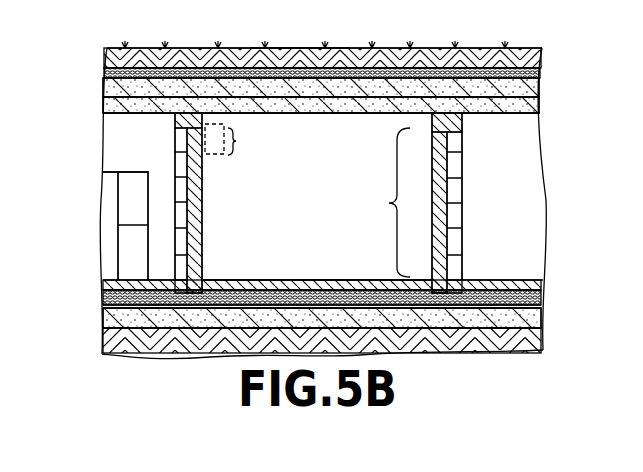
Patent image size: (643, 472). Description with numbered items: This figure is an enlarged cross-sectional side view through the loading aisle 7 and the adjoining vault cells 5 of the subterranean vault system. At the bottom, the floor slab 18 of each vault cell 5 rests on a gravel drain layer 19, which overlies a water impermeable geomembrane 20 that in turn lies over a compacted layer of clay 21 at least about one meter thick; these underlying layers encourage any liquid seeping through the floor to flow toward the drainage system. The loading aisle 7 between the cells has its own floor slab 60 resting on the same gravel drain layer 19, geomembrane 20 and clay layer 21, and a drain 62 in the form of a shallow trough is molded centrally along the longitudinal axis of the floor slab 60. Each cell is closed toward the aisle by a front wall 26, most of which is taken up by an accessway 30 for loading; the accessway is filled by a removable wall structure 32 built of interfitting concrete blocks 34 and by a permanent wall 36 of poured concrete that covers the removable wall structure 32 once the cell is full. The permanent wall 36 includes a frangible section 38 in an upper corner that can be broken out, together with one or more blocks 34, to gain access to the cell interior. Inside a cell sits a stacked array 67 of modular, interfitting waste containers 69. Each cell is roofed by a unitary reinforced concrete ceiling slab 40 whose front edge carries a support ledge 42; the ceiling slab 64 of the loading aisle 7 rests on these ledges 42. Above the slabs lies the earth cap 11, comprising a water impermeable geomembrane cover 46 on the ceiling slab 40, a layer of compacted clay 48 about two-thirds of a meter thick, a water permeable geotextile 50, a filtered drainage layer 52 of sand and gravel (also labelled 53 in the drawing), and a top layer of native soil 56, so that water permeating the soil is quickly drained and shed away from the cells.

The vault cell 5 is at (135, 160).
The loading aisle 7 is at (325, 177).
The earth cap 11 is at (300, 48).
The floor slab 18 is at (100, 281).
The gravel drain layer 19 is at (100, 298).
The geomembrane 20 is at (100, 308).
The compacted layer of clay 21 is at (105, 325).
The front wall 26 is at (432, 232).
The accessway 30 is at (381, 202).
The removable wall structure 32 is at (445, 181).
The interfitting concrete blocks 34 is at (182, 190).
The permanent wall 36 is at (183, 216).
The frangible section 38 is at (235, 142).
The ceiling slab 40 is at (108, 107).
The support ledge 42 is at (205, 125).
The geomembrane cover 46 is at (533, 97).
The layer of compacted clay 48 is at (527, 88).
The geotextile 50 is at (102, 80).
The filtered drainage layer 52 is at (537, 72).
The gravel layer 53 is at (103, 72).
The layer of native soil 56 is at (441, 70).
The floor slab 60 is at (263, 280).
The drain 62 is at (317, 280).
The ceiling slab 64 is at (341, 105).
The stacked array 67 is at (92, 190).
The waste containers 69 is at (110, 235).